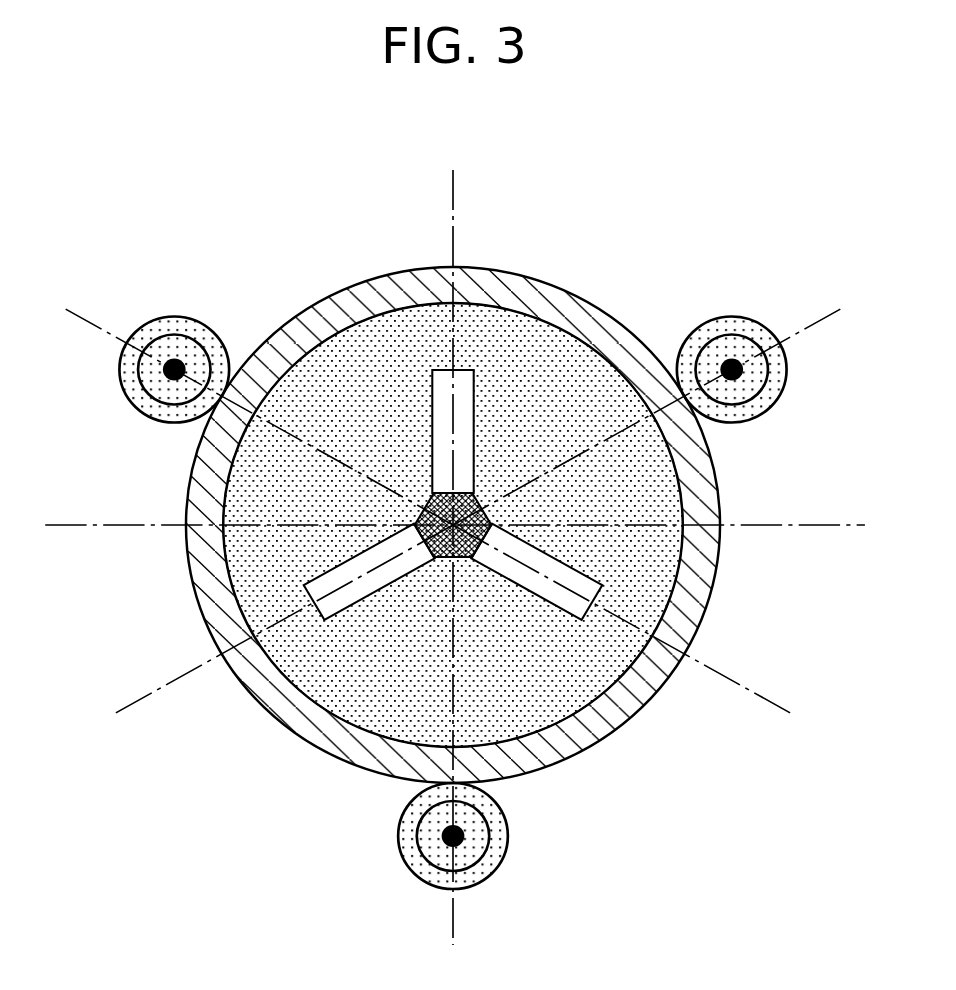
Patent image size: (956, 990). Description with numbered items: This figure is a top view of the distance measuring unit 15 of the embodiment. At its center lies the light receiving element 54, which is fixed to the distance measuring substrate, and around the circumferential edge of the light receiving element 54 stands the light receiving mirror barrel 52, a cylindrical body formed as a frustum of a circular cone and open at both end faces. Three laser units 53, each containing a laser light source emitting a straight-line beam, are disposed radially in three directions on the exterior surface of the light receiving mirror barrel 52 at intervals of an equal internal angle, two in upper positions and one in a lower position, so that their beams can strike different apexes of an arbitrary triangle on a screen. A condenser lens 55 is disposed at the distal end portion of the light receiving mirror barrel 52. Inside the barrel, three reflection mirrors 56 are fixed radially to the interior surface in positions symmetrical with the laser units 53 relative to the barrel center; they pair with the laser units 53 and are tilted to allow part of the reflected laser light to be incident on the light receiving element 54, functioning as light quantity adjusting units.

The distance measuring unit 15 is at (198, 188).
The light receiving mirror barrel 52 is at (305, 717).
The laser units 53 is at (172, 322).
The light receiving element 54 is at (423, 517).
The condenser lens 55 is at (592, 670).
The reflection mirrors 56 is at (465, 413).